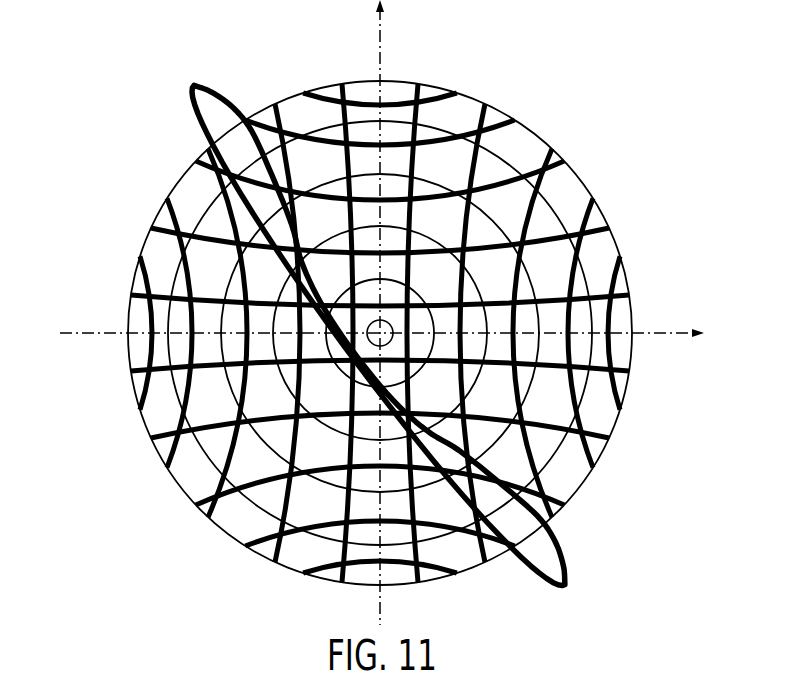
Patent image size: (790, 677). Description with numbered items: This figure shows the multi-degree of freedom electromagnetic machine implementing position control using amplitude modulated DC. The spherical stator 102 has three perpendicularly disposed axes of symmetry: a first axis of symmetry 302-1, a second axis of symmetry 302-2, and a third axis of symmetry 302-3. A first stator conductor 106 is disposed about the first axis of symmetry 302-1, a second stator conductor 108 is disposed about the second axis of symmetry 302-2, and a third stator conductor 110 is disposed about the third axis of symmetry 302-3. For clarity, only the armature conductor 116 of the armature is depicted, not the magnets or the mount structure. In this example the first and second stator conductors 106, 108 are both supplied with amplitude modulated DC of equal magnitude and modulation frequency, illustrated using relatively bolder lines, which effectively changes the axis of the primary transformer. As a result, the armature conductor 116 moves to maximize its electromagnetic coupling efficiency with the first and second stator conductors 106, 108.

The stator 102 is at (532, 128).
The first stator conductor 106 is at (621, 268).
The second stator conductor 108 is at (427, 93).
The third stator conductor 110 is at (313, 128).
The armature conductor 116 is at (196, 103).
The first axis of symmetry 302-1 is at (75, 336).
The second axis of symmetry 302-2 is at (367, 333).
The third axis of symmetry 302-3 is at (378, 6).